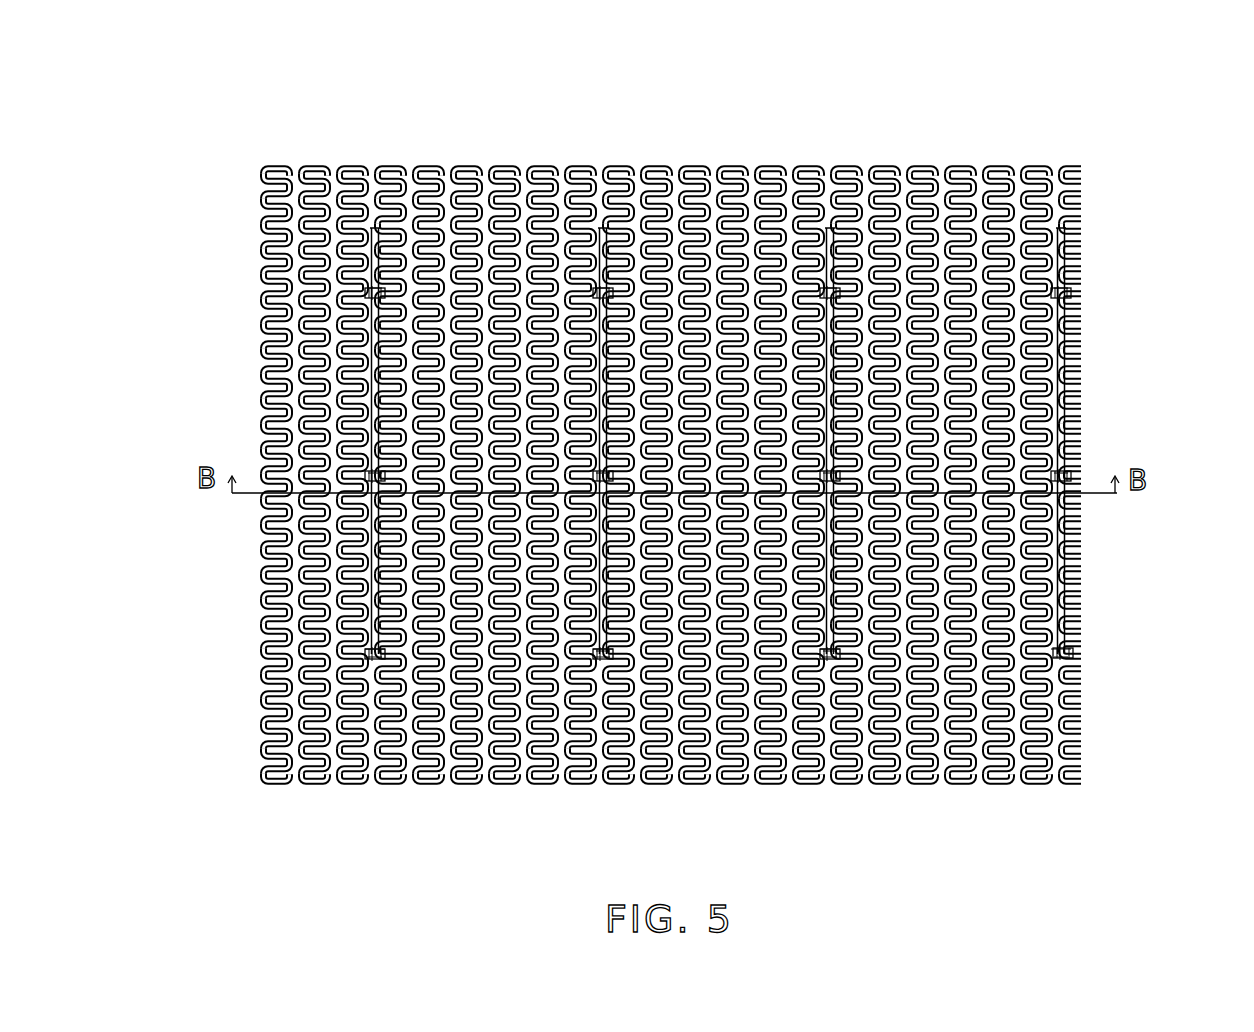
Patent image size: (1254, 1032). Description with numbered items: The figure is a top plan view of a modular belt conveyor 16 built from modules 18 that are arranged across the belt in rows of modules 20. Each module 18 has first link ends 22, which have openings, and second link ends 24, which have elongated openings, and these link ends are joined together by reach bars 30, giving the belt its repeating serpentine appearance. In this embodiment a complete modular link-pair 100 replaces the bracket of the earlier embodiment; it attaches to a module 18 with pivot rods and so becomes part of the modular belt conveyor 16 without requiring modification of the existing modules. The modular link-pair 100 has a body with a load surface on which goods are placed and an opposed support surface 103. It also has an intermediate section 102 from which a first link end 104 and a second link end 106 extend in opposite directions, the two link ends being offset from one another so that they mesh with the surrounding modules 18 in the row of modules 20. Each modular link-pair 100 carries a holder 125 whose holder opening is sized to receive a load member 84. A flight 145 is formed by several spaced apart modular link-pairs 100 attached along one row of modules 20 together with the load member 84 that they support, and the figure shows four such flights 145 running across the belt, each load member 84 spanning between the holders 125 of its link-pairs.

The modular belt conveyor 16 is at (998, 98).
The module 18 is at (367, 180).
The row of modules 20 is at (373, 182).
The first link end 22 is at (283, 260).
The second link end 24 is at (287, 260).
The reach bar 30 is at (270, 257).
The load member 84 is at (355, 350).
The modular link-pair 100 is at (372, 268).
The intermediate section 102 is at (600, 292).
The support surface 103 is at (604, 663).
The first link end 104 is at (595, 660).
The second link end 106 is at (376, 662).
The holder 125 is at (385, 295).
The flight 145 is at (380, 262).